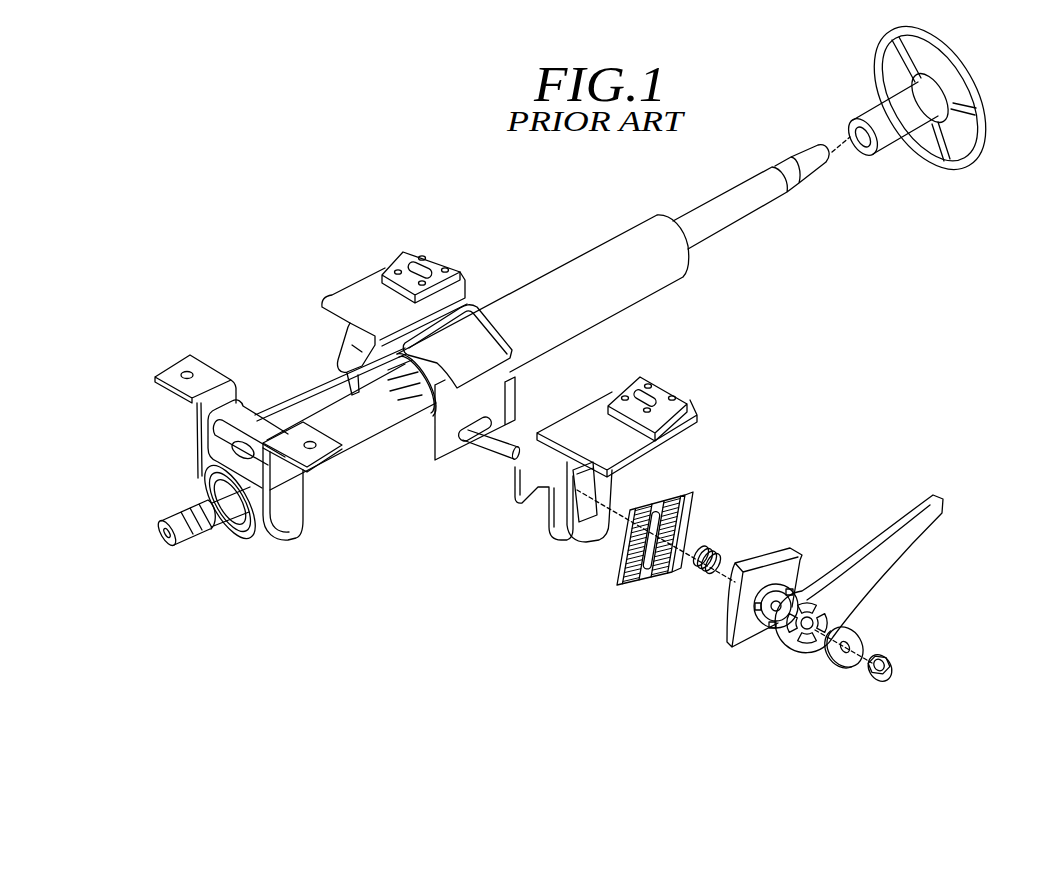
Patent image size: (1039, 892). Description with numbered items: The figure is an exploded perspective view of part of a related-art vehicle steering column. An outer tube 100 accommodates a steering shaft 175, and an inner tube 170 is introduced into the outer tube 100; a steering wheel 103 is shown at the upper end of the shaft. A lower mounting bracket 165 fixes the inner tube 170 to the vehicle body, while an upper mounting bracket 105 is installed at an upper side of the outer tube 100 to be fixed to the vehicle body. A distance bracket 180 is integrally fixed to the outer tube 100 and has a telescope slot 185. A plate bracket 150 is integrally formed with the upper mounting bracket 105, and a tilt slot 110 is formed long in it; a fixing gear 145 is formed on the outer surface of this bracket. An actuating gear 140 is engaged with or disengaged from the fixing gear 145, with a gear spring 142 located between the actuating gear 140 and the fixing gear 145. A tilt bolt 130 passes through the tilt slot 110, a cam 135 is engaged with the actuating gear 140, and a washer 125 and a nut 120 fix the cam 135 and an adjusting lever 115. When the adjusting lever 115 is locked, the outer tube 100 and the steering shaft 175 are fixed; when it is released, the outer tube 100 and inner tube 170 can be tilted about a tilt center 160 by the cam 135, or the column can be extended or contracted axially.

The outer tube 100 is at (633, 240).
The steering wheel 103 is at (953, 164).
The upper mounting bracket 105 is at (358, 292).
The tilt slot 110 is at (578, 517).
The adjusting lever 115 is at (877, 570).
The nut 120 is at (867, 678).
The washer 125 is at (828, 660).
The tilt bolt 130 is at (491, 455).
The cam 135 is at (790, 588).
The actuating gear 140 is at (733, 630).
The gear spring 142 is at (707, 547).
The fixing gear 145 is at (685, 495).
The plate bracket 150 is at (547, 533).
The tilt center 160 is at (298, 470).
The lower mounting bracket 165 is at (203, 364).
The inner tube 170 is at (325, 468).
The steering shaft 175 is at (735, 217).
The distance bracket 180 is at (443, 465).
The telescope slot 185 is at (508, 420).